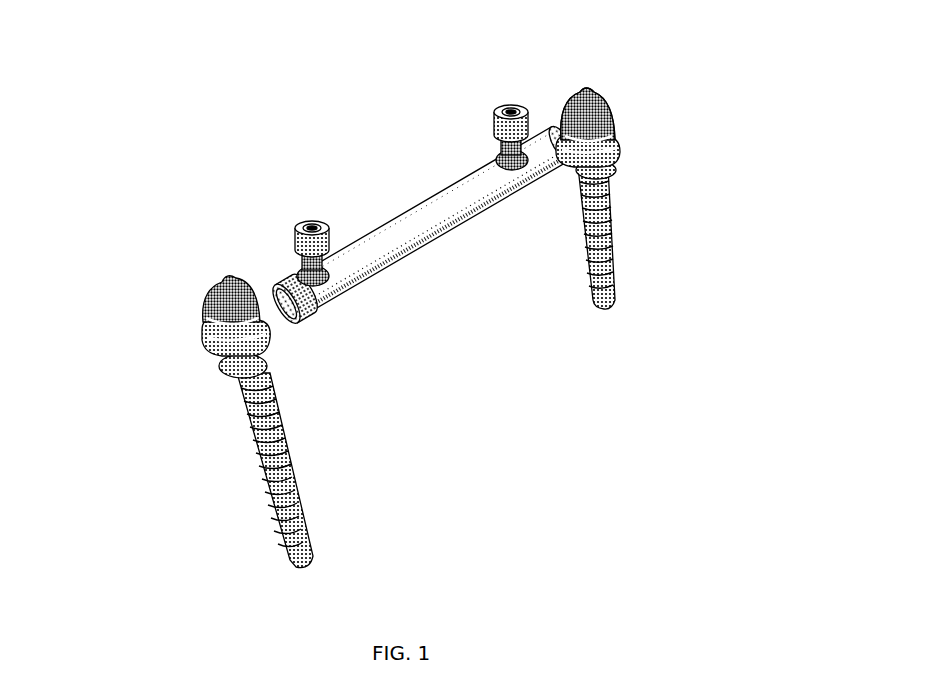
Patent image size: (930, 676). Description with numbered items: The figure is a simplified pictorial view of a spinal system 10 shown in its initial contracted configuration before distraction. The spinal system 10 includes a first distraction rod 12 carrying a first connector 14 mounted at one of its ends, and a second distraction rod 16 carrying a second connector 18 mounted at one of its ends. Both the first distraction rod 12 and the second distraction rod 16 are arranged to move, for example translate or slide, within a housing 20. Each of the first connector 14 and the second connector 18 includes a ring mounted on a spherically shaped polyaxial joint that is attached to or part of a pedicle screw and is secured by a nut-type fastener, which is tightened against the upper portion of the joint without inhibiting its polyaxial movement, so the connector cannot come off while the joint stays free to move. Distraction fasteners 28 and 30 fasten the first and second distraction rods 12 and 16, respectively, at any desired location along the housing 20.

The spinal system 10 is at (338, 156).
The first distraction rod 12 is at (265, 300).
The first connector 14 is at (175, 369).
The second distraction rod 16 is at (663, 168).
The second connector 18 is at (615, 135).
The housing 20 is at (443, 245).
The distraction fastener 28 is at (296, 228).
The distraction fastener 30 is at (497, 110).